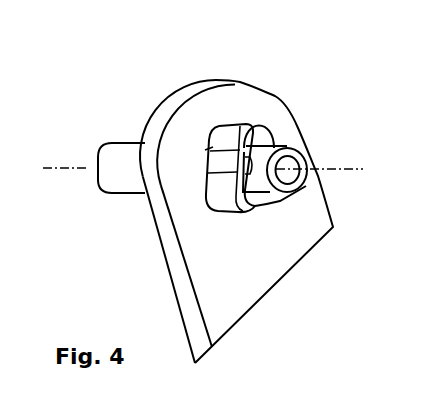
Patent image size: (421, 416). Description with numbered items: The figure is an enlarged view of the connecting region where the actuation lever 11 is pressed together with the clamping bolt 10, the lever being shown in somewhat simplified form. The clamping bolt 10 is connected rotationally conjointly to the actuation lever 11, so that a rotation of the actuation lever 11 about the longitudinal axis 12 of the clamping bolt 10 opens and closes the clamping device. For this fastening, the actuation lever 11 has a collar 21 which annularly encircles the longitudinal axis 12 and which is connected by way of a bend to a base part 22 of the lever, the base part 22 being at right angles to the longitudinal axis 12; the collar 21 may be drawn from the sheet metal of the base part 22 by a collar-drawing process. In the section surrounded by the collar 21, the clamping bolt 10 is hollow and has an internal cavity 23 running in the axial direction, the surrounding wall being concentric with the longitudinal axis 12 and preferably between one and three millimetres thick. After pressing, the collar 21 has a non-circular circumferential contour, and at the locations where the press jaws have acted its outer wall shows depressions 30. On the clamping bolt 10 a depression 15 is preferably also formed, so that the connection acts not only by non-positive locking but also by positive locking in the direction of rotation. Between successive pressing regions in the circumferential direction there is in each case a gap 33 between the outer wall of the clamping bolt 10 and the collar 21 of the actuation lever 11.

The clamping bolt 10 is at (258, 186).
The actuation lever 11 is at (310, 271).
The longitudinal axis 12 is at (88, 167).
The depression 15 is at (248, 140).
The collar 21 is at (237, 127).
The base part 22 is at (223, 288).
The internal cavity 23 is at (283, 160).
The depressions 30 is at (211, 165).
The gap 33 is at (258, 140).